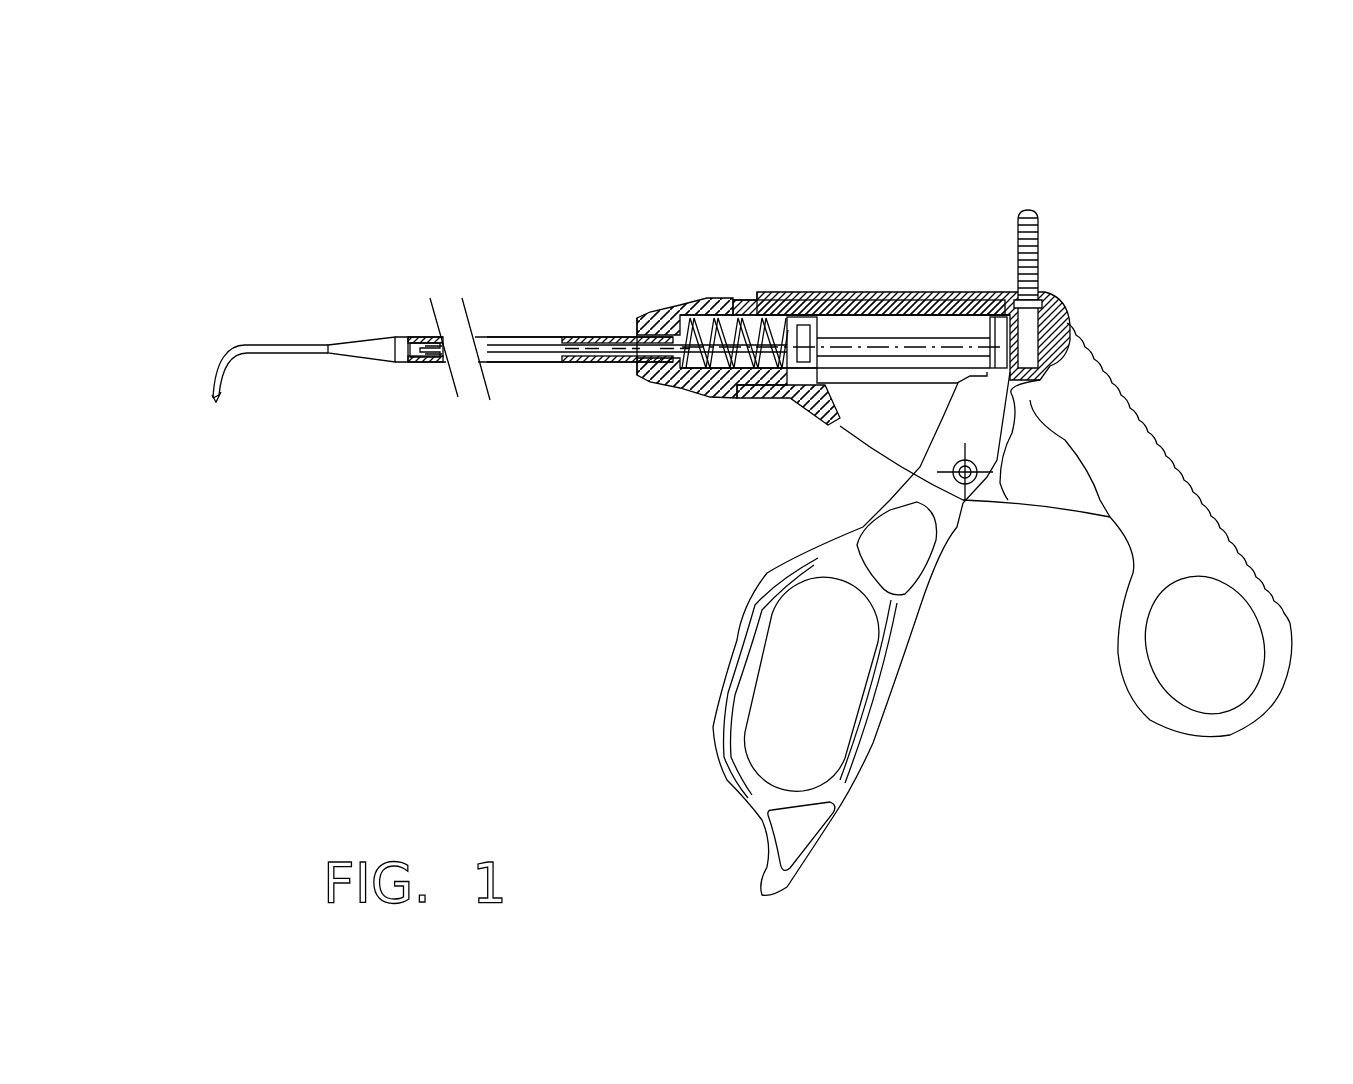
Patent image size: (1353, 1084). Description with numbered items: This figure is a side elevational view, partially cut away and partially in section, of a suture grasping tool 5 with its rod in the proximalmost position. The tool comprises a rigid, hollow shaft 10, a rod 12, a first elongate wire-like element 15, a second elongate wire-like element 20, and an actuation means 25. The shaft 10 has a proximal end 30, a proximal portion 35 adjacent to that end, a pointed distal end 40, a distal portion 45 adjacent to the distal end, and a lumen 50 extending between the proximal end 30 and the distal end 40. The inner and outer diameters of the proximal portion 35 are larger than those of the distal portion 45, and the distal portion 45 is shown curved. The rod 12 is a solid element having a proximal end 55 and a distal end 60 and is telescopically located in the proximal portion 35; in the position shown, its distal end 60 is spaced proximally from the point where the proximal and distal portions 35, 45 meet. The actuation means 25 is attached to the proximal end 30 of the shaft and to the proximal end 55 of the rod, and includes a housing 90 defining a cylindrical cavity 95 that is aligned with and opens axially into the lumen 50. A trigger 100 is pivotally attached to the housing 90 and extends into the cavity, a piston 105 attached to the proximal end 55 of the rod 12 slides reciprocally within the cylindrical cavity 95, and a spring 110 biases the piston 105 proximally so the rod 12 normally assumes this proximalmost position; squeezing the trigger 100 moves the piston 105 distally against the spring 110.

The suture grasping tool 5 is at (655, 232).
The rigid, hollow shaft 10 is at (540, 364).
The rod 12 is at (603, 364).
The first elongate wire-like element 15 is at (415, 337).
The second elongate wire-like element 20 is at (410, 362).
The actuation means 25 is at (1155, 438).
The proximal end 30 is at (690, 392).
The proximal portion 35 is at (582, 362).
The pointed distal end 40 is at (212, 398).
The distal portion 45 is at (227, 362).
The lumen 50 is at (575, 337).
The proximal end 55 is at (743, 390).
The distal end 60 is at (430, 362).
The housing 90 is at (883, 293).
The cylindrical cavity 95 is at (917, 293).
The trigger 100 is at (725, 683).
The piston 105 is at (852, 293).
The spring 110 is at (738, 300).